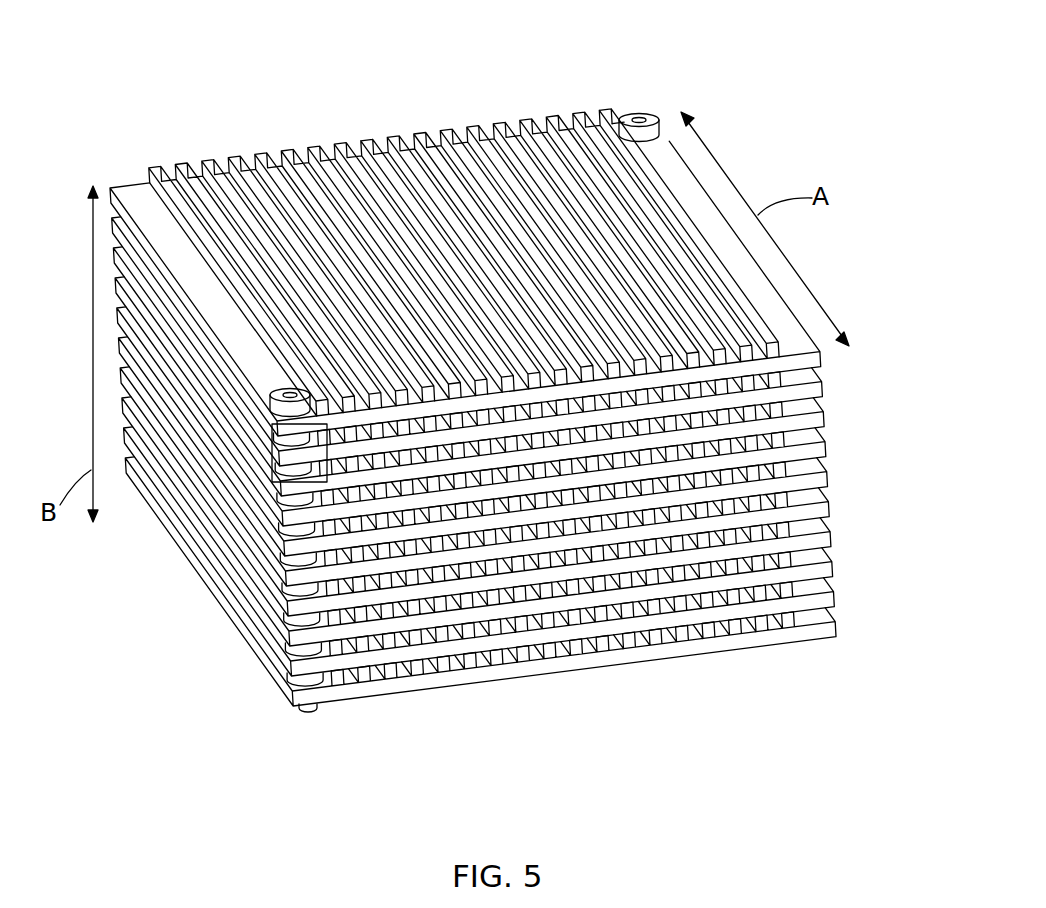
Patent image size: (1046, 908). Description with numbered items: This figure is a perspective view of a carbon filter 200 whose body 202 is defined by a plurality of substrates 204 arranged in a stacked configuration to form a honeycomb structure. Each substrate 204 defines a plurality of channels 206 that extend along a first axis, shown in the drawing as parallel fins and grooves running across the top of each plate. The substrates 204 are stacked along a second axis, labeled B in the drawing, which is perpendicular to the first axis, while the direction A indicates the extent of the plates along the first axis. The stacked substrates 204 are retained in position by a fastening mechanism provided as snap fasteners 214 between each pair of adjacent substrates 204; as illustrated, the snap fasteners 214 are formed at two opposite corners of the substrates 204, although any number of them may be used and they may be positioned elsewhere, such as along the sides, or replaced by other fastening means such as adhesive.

The carbon filter 200 is at (706, 72).
The body 202 is at (893, 63).
The substrate 204 is at (143, 202).
The channels 206 is at (277, 160).
The snap fastener 214 is at (272, 482).